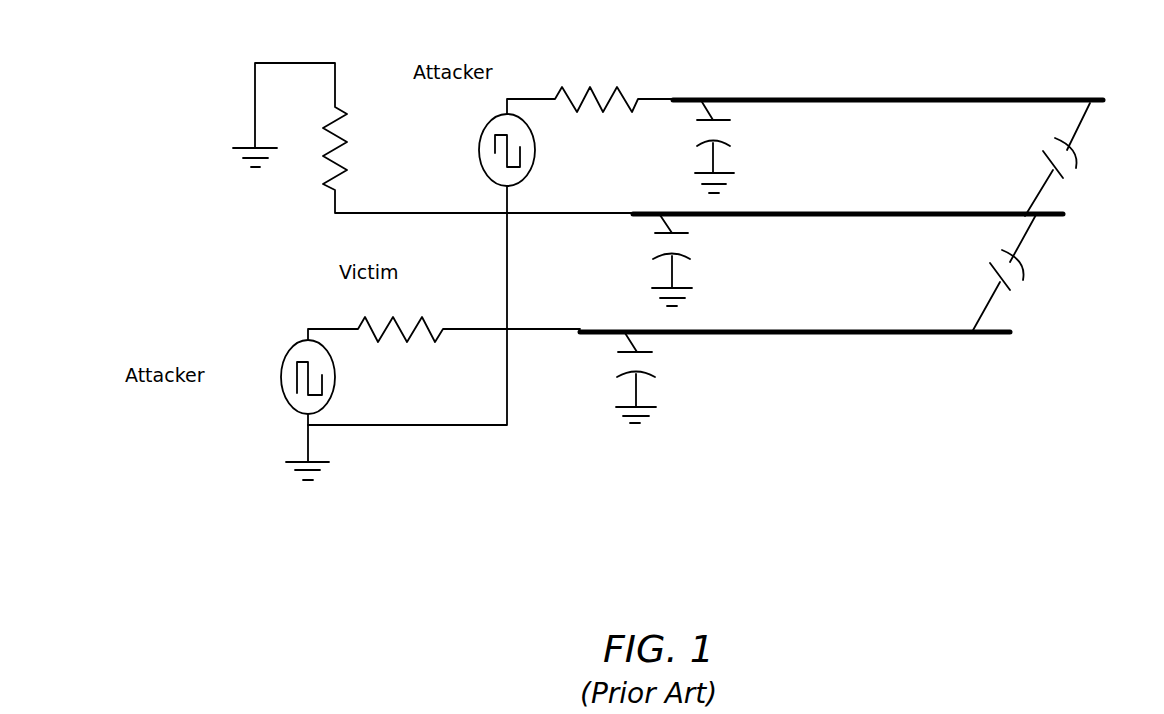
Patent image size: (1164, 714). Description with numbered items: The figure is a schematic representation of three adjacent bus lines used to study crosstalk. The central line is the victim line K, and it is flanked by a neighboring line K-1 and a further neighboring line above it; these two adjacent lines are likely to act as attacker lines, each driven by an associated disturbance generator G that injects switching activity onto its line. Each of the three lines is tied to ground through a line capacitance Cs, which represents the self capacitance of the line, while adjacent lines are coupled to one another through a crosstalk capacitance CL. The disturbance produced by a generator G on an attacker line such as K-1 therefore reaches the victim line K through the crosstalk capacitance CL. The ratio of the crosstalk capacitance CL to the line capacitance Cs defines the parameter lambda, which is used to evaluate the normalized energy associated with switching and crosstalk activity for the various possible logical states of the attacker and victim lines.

The disturbance generator G is at (478, 158).
The victim line K is at (882, 213).
The attacker line K−1 K-1 is at (830, 332).
The line capacitance Cs is at (730, 141).
The crosstalk capacitance CL is at (1076, 172).